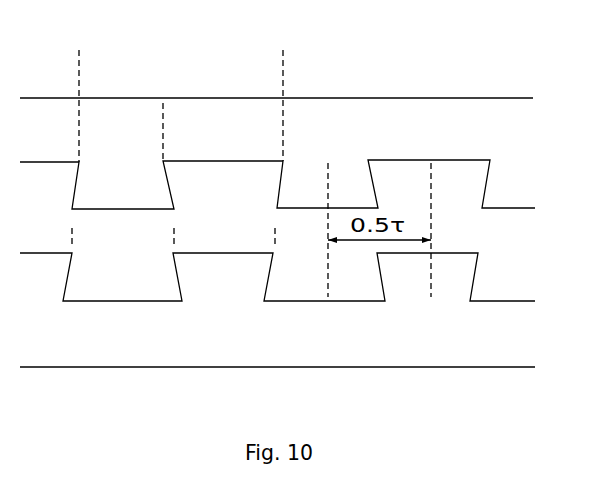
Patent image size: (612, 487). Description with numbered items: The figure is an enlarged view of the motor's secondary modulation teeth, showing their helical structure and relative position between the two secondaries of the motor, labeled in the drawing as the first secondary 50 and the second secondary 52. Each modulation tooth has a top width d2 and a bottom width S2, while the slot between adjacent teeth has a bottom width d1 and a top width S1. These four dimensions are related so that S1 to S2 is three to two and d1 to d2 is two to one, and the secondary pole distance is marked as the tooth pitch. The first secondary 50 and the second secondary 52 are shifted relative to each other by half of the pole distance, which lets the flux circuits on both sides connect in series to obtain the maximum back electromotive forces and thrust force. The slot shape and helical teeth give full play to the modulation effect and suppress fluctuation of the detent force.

The first secondary 50 is at (397, 123).
The second secondary 52 is at (399, 335).
The bottom width of the slot d1 is at (283, 141).
The top width of modulation tooth d2 is at (163, 141).
The top width of the slot S1 is at (275, 220).
The bottom width of teeth S2 is at (174, 220).